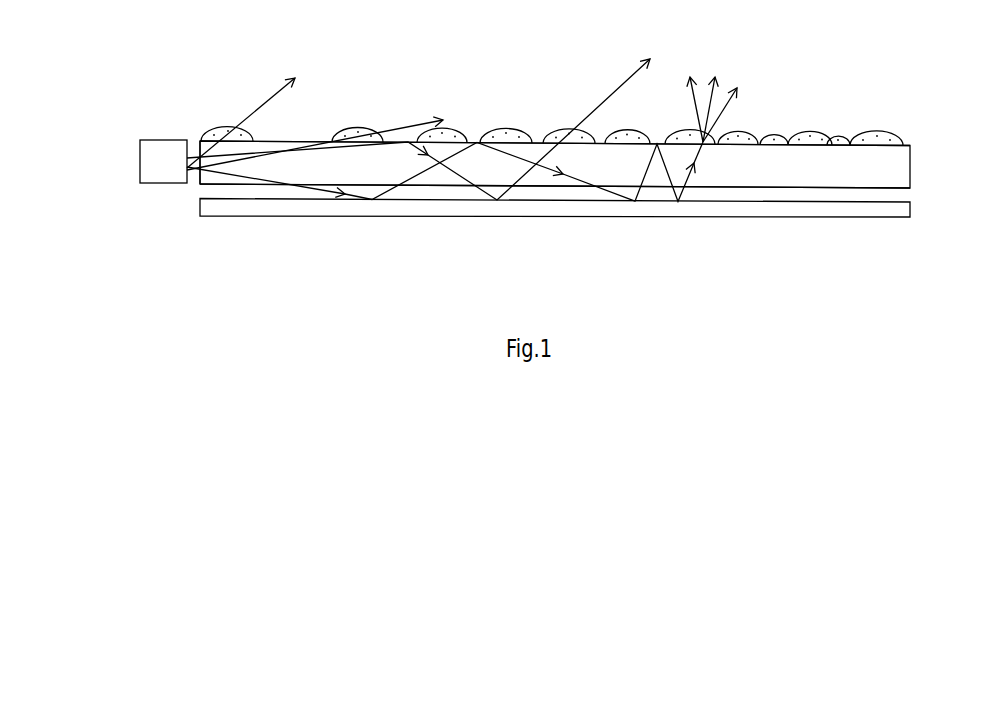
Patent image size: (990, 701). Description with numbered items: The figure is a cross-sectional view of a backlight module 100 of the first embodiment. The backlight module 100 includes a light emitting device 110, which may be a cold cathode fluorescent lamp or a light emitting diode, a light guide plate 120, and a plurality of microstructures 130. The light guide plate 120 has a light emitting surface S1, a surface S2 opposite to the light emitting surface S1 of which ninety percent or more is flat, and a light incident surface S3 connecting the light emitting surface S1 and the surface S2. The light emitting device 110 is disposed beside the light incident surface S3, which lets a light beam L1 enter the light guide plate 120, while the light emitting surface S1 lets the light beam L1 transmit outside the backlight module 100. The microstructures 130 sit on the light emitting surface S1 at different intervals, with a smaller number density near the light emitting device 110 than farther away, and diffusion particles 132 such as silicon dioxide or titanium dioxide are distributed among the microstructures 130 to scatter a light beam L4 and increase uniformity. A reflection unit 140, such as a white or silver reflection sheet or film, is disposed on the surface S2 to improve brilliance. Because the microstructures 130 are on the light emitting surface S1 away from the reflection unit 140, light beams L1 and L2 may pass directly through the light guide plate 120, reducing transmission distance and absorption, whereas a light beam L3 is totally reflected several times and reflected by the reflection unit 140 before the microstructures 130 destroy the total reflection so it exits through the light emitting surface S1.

The backlight module 100 is at (913, 292).
The light emitting device 110 is at (146, 162).
The light guide plate 120 is at (895, 168).
The microstructures 130 is at (838, 131).
The diffusion particles 132 is at (676, 130).
The reflection unit 140 is at (905, 212).
The light emitting surface S1 is at (905, 143).
The surface S2 is at (906, 189).
The light incident surface S3 is at (200, 178).
The light beam L1 is at (272, 100).
The light beam L2 is at (417, 122).
The light beam L3 is at (623, 82).
The light beam L4 is at (718, 115).